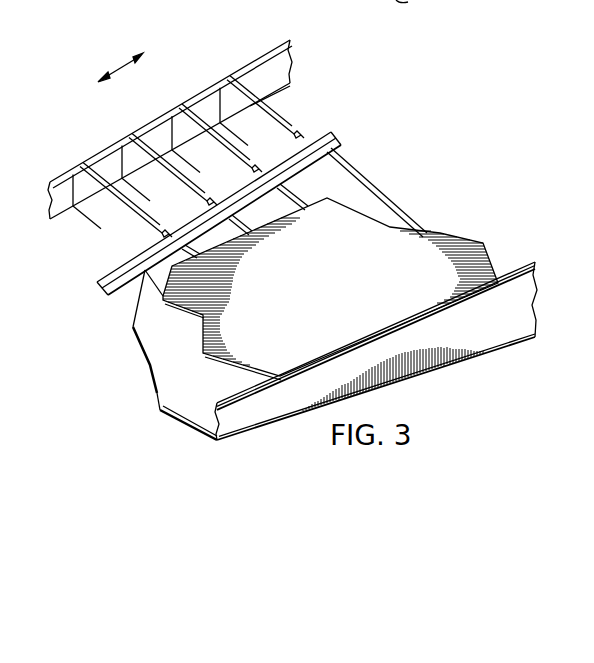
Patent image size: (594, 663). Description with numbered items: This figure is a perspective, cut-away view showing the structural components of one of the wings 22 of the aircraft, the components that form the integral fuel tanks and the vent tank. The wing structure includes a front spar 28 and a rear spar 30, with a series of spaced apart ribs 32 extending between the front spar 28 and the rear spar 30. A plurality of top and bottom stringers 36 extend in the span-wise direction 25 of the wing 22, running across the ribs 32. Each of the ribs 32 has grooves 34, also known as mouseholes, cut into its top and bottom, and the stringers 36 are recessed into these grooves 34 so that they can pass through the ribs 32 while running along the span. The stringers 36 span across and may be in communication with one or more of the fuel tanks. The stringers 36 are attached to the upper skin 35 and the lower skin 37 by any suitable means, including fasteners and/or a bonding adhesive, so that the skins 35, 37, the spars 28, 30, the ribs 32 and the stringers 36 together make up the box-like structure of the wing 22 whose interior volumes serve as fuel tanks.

The wing 22 is at (378, 157).
The span-wise direction 25 is at (120, 67).
The front spar 28 is at (62, 175).
The rear spar 30 is at (538, 293).
The rib 32 is at (98, 172).
The groove 34 is at (156, 229).
The upper skin 35 is at (322, 296).
The stringer 36 is at (110, 270).
The lower skin 37 is at (154, 390).